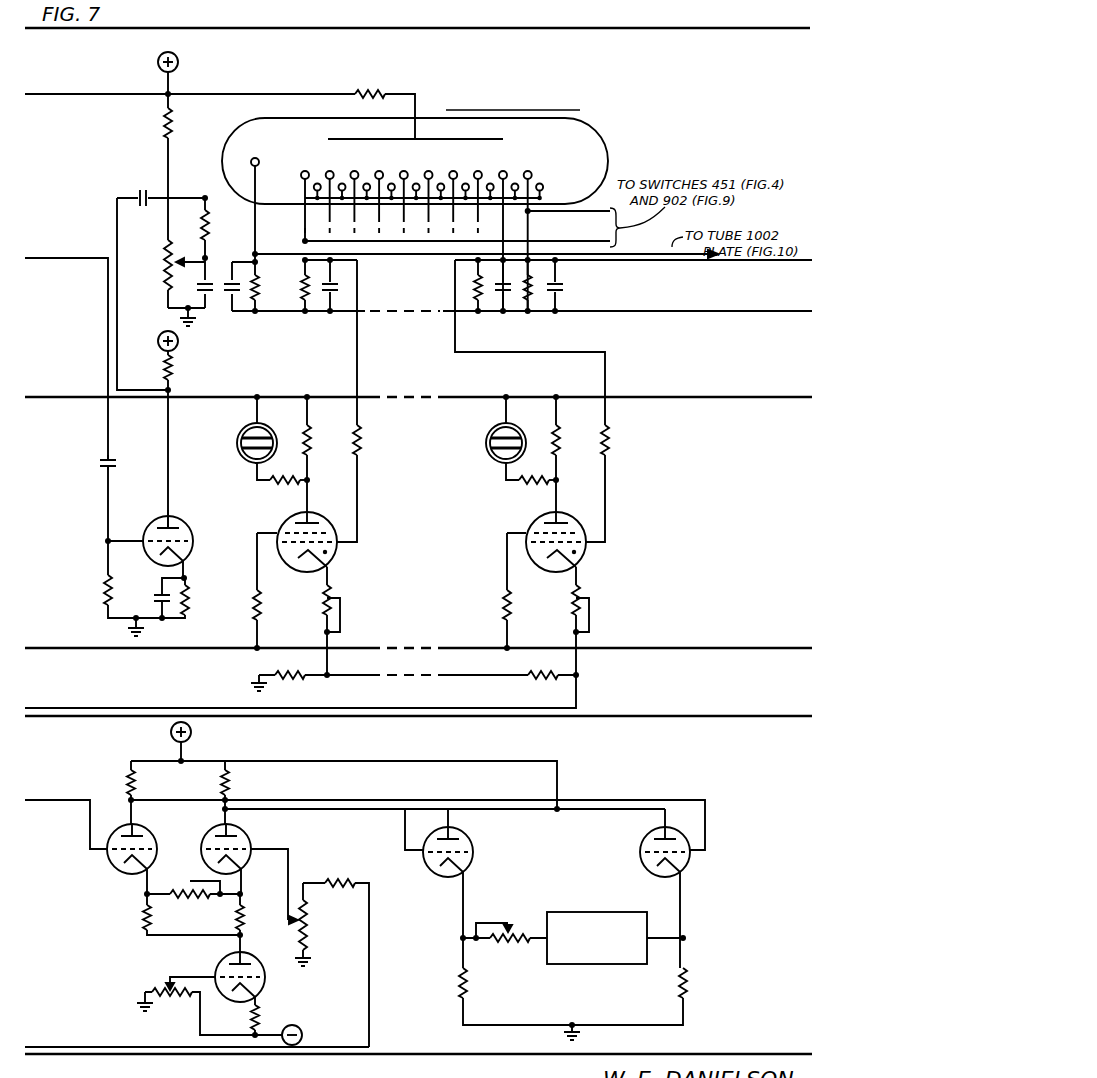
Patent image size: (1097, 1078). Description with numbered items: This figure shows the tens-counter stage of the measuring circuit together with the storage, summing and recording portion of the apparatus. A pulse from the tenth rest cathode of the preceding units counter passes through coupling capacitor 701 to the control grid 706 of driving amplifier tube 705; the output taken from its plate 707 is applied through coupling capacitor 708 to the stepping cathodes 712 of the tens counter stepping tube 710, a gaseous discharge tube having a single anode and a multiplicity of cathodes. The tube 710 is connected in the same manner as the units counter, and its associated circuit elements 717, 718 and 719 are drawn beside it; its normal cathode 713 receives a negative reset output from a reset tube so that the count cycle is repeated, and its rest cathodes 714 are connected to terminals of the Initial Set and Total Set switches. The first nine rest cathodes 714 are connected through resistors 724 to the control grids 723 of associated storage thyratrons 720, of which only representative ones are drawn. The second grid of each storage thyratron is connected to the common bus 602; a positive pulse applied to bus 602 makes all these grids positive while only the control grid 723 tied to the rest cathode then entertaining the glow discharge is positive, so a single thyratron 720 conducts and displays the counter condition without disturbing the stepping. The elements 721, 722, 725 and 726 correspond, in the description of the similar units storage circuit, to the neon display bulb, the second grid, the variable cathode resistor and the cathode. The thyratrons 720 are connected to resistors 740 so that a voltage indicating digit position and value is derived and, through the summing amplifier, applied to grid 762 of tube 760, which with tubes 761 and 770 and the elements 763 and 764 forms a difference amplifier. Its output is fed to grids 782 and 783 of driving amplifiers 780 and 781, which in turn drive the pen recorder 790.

The common bus 602 is at (46, 622).
The coupling capacitor 701 is at (105, 460).
The driving amplifier tube 705 is at (193, 536).
The control grid 706 is at (156, 527).
The plate 707 is at (171, 531).
The coupling capacitor 708 is at (141, 190).
The tens counter stepping tube 710 is at (611, 152).
The stepping cathodes 712 is at (368, 185).
The normal cathode 713 is at (258, 160).
The rest cathodes 714 is at (308, 172).
The potentiometer 717 is at (166, 259).
The resistor 718 is at (212, 226).
The capacitor 719 is at (211, 282).
The storage thyratrons 720 is at (328, 519).
The indicator lamp 721 is at (237, 438).
The first grid of tube 720 722 is at (292, 530).
The control grids 723 is at (346, 545).
The resistors 724 is at (370, 438).
The cathode resistor 725 is at (341, 590).
The cathode of tube 720 726 is at (311, 566).
The resistors 740 is at (297, 680).
The tube 760 is at (151, 837).
The tube 761 is at (246, 842).
The grid 762 is at (114, 846).
The cathode of tube 761 763 is at (238, 858).
The potentiometer 764 is at (316, 921).
The tube 770 is at (266, 990).
The driving amplifier 780 is at (644, 861).
The driving amplifier 781 is at (473, 866).
The grid 782 is at (690, 865).
The grid 783 is at (428, 867).
The pen recorder 790 is at (573, 913).